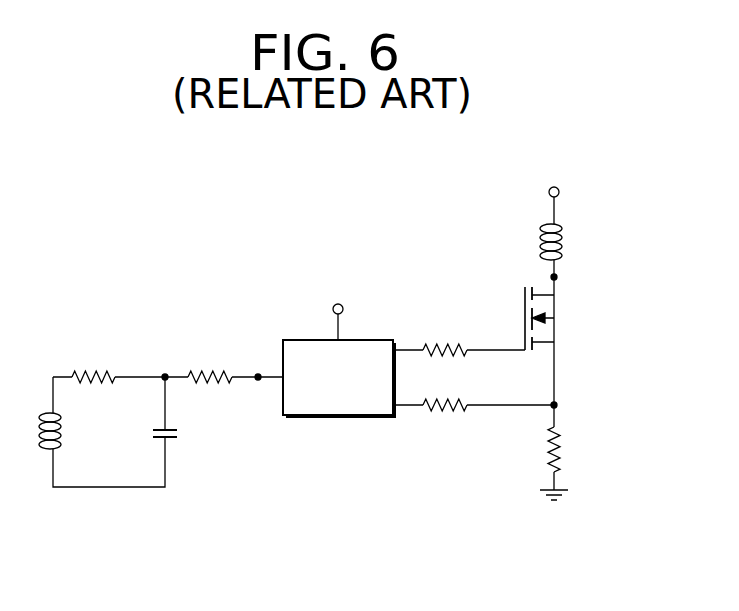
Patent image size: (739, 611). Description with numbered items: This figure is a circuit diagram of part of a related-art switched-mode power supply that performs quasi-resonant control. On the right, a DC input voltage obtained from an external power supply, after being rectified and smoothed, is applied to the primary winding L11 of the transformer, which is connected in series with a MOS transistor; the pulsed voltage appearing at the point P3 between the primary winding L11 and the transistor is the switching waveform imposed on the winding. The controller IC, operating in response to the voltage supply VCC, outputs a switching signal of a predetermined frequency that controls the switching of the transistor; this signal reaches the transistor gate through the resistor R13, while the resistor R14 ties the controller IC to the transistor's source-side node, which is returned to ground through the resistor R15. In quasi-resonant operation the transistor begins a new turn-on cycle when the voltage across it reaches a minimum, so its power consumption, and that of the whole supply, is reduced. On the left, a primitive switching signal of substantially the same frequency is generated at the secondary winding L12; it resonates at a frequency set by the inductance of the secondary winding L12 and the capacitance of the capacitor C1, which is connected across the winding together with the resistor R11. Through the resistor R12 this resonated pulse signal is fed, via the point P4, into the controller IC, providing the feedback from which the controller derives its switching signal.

The resistor R11 is at (93, 366).
The resistor R12 is at (210, 366).
The resistor R13 is at (445, 338).
The resistor R14 is at (445, 393).
The resistor R15 is at (568, 463).
The primary winding L11 is at (567, 242).
The secondary winding L12 is at (67, 431).
The capacitor C1 is at (170, 422).
The point P3 is at (573, 268).
The point P4 is at (259, 364).
The controller IC is at (339, 379).
The voltage supply VCC is at (337, 309).